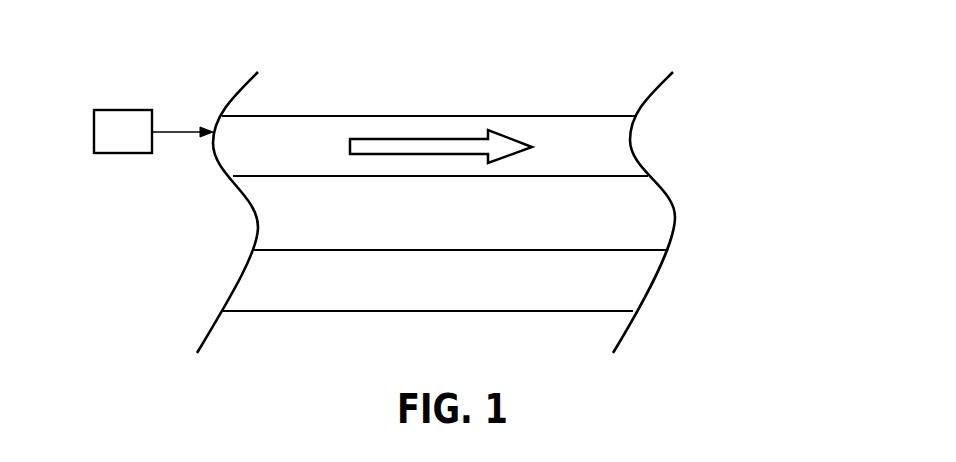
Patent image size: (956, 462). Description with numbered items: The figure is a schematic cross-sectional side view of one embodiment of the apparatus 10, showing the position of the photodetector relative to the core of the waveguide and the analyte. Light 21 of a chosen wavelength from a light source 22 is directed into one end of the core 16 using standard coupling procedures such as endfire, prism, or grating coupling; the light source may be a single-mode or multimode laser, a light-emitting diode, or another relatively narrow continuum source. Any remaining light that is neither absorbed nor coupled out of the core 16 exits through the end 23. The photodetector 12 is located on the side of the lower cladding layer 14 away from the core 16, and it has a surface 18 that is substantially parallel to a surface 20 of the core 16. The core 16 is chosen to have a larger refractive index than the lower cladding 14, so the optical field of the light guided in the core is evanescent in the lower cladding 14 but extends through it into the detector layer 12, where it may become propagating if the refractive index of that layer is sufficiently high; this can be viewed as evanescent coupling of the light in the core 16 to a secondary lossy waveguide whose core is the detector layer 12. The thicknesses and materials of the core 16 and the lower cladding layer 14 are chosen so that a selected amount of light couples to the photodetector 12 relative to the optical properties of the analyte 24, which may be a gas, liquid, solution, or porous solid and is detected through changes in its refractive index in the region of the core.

The apparatus 10 is at (725, 68).
The photodetector 12 is at (250, 290).
The lower cladding layer 14 is at (287, 223).
The core 16 is at (613, 147).
The surface 18 is at (618, 251).
The surface 20 is at (610, 176).
The light 21 is at (622, 67).
The light source 22 is at (138, 110).
The end 23 is at (643, 128).
The analyte 24 is at (462, 103).